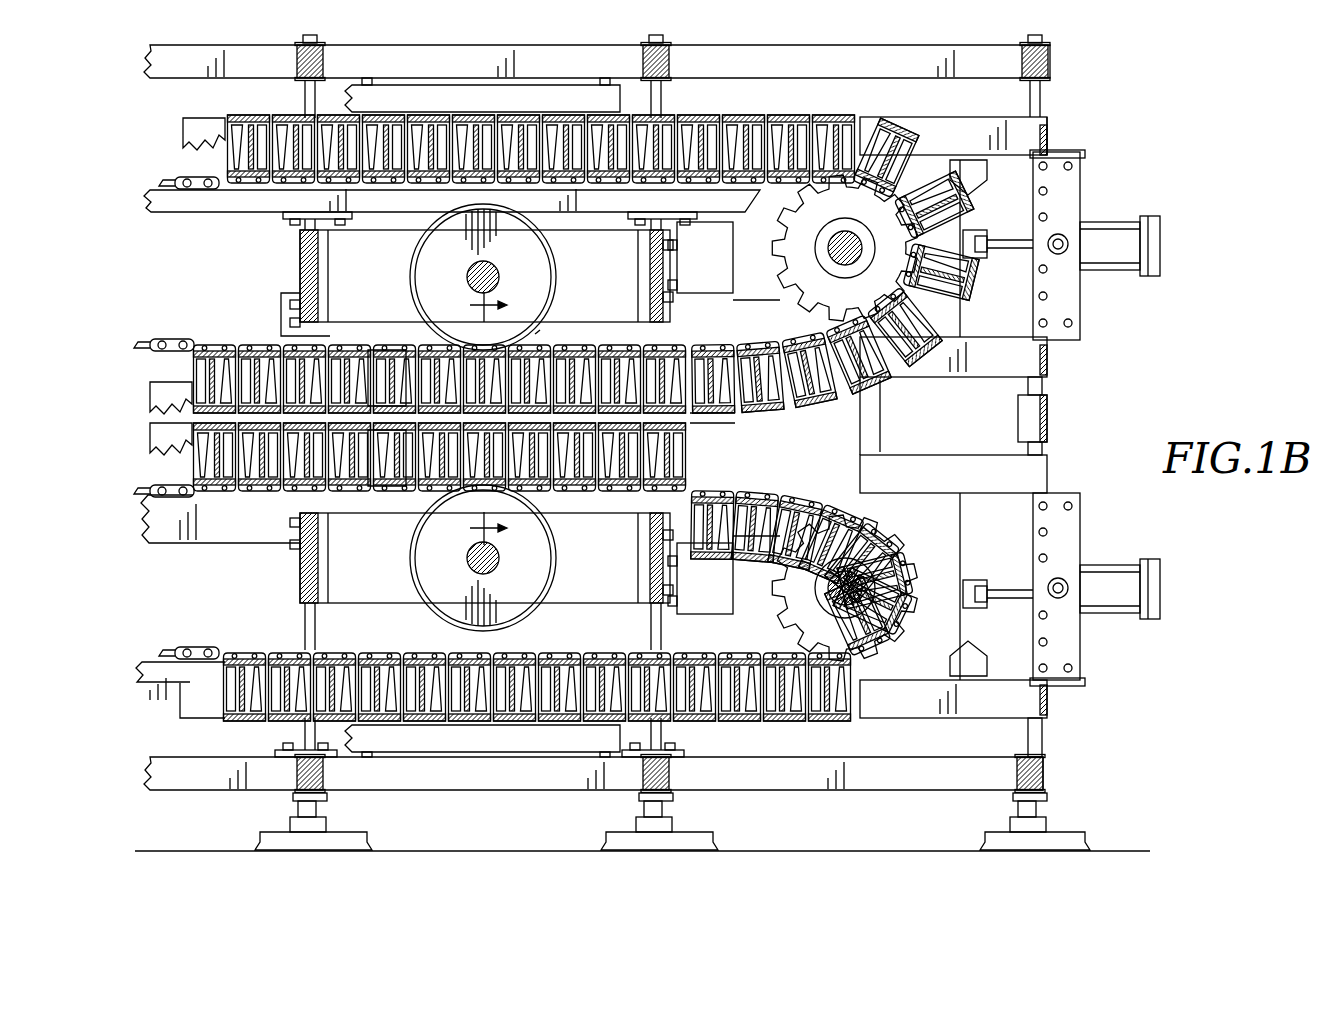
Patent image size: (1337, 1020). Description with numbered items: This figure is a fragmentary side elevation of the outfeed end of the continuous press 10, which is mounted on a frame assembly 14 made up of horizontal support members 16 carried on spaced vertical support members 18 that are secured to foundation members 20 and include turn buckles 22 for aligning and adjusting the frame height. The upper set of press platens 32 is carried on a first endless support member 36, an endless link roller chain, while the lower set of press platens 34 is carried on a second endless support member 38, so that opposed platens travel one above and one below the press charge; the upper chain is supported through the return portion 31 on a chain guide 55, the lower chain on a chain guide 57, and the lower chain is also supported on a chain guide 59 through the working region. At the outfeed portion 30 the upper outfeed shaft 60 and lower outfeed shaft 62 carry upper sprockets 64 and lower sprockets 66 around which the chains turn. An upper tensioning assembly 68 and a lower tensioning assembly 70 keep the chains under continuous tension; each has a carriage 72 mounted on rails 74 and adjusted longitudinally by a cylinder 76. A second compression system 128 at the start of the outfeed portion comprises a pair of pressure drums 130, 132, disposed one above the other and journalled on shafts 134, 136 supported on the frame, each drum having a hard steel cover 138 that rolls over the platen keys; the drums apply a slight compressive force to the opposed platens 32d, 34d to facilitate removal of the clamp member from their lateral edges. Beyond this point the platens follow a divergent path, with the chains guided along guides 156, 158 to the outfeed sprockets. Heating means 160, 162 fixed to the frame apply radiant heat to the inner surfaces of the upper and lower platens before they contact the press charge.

The continuous press 10 is at (962, 16).
The frame assembly 14 is at (1113, 131).
The horizontal support member 16 is at (303, 271).
The vertical support member 18 is at (298, 89).
The foundation member 20 is at (262, 847).
The turn buckle 22 is at (677, 419).
The outfeed portion 30 is at (904, 381).
The return portion 31 is at (722, 97).
The upper set of press platens 32 is at (161, 386).
The upper press platen 32d is at (387, 372).
The lower set of press platens 34 is at (161, 456).
The lower press platen 34d is at (382, 469).
The first endless support member 36 is at (197, 176).
The second endless support member 38 is at (161, 479).
The chain guide 55 is at (230, 206).
The chain guide 57 is at (168, 673).
The chain guide 59 is at (227, 534).
The upper outfeed shaft 60 is at (830, 248).
The lower outfeed shaft 62 is at (828, 588).
The upper sprocket 64 is at (800, 267).
The lower sprocket 66 is at (790, 576).
The upper tensioning assembly 68 is at (1087, 198).
The lower tensioning assembly 70 is at (1119, 615).
The carriage 72 is at (972, 174).
The rail 74 is at (1000, 130).
The cylinder 76 is at (1130, 272).
The second compression system 128 is at (366, 525).
The pressure drum 130 is at (509, 277).
The pressure drum 132 is at (522, 546).
The shaft 134 is at (473, 271).
The shaft 136 is at (467, 563).
The hard steel cover 138 is at (560, 268).
The guide 156 is at (708, 294).
The guide 158 is at (708, 595).
The heating means 160 is at (537, 86).
The heating means 162 is at (472, 752).